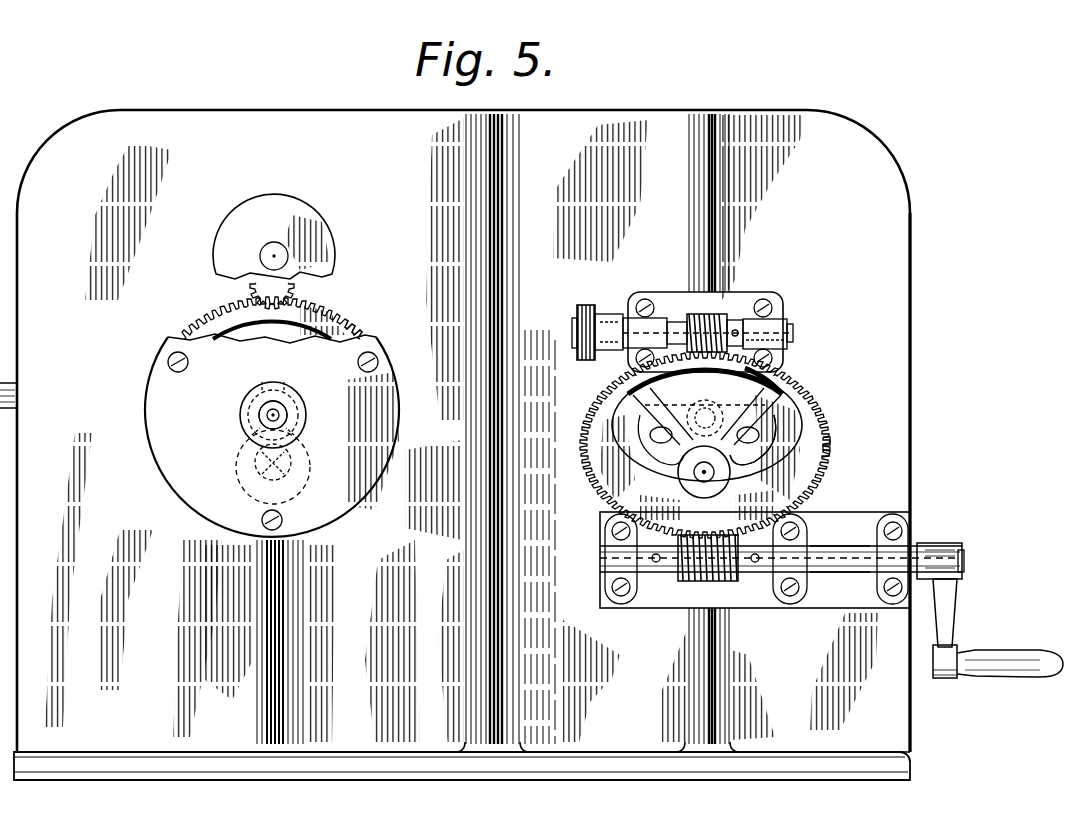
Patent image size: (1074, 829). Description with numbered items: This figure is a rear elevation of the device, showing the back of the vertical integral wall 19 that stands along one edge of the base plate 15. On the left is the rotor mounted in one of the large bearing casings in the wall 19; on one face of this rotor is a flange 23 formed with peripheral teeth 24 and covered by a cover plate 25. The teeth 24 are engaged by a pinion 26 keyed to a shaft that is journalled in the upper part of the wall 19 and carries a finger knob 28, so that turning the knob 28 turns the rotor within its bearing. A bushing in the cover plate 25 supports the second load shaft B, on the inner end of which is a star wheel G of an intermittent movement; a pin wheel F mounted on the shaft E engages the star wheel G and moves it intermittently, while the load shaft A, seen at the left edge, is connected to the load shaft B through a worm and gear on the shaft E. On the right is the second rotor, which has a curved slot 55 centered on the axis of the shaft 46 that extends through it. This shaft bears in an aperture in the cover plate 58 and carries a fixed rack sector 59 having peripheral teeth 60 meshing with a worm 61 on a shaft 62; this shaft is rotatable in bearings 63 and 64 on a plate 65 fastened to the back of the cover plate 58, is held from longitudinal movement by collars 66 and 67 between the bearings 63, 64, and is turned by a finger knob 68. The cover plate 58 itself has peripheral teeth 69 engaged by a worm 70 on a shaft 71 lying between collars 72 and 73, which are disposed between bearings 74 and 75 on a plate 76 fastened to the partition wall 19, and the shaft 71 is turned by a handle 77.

The base plate 15 is at (565, 765).
The vertical integral wall 19 is at (463, 431).
The flange 23 is at (232, 318).
The peripheral teeth 24 is at (355, 333).
The cover plate 25 is at (272, 435).
The pinion 26 is at (300, 285).
The finger knob 28 is at (308, 220).
The shaft 46 is at (694, 476).
The curved slot 55 is at (760, 444).
The cover plate 58 is at (805, 408).
The rack sector 59 is at (705, 417).
The peripheral teeth 60 is at (788, 382).
The worm 61 is at (718, 324).
The shaft 62 is at (780, 331).
The bearing 63 is at (652, 322).
The bearing 64 is at (762, 326).
The plate 65 is at (668, 322).
The collar 66 is at (690, 322).
The collar 67 is at (740, 322).
The finger knob 68 is at (587, 305).
The peripheral teeth 69 is at (823, 441).
The worm 70 is at (730, 583).
The shaft 71 is at (858, 536).
The collar 72 is at (655, 570).
The collar 73 is at (757, 582).
The bearing 74 is at (607, 574).
The bearing 75 is at (804, 574).
The plate 76 is at (634, 604).
The handle 77 is at (945, 616).
The load shaft A is at (10, 385).
The second load shaft B is at (245, 414).
The shaft E is at (267, 462).
The pin wheel F is at (298, 477).
The star wheel G is at (290, 400).